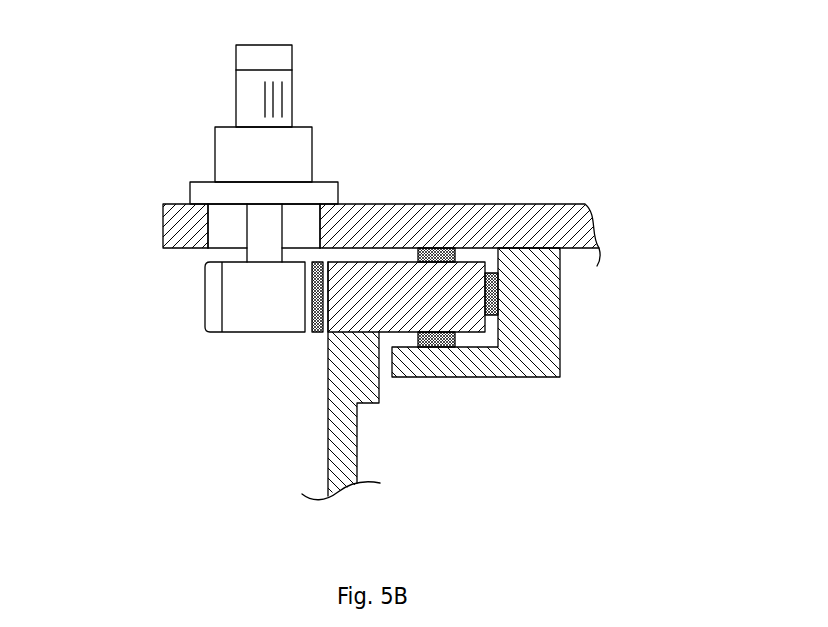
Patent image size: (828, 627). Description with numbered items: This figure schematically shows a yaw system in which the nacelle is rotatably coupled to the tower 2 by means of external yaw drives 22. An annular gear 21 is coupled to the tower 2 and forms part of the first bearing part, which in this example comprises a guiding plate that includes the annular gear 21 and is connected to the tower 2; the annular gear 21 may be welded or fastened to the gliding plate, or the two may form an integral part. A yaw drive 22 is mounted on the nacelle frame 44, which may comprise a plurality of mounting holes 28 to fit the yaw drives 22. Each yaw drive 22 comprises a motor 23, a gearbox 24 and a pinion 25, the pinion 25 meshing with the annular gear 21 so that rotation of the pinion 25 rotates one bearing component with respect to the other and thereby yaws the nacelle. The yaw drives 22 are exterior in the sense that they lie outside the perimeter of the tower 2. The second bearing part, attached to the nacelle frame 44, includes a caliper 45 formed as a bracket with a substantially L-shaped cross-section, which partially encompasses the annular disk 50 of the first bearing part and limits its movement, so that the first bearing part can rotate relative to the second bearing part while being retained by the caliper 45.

The tower 2 is at (328, 472).
The annular gear 21 is at (316, 334).
The yaw drive 22 is at (165, 146).
The motor 23 is at (292, 82).
The gearbox 24 is at (288, 157).
The pinion 25 is at (253, 318).
The mounting hole 28 is at (225, 238).
The nacelle frame 44 is at (483, 222).
The caliper 45 is at (538, 317).
The annular disk 50 is at (450, 308).